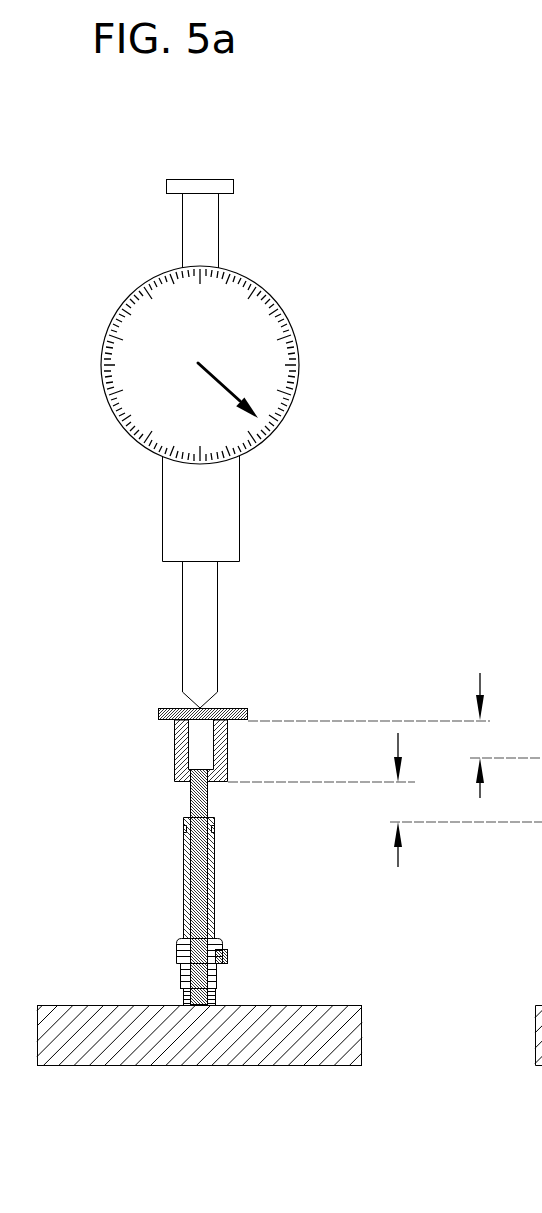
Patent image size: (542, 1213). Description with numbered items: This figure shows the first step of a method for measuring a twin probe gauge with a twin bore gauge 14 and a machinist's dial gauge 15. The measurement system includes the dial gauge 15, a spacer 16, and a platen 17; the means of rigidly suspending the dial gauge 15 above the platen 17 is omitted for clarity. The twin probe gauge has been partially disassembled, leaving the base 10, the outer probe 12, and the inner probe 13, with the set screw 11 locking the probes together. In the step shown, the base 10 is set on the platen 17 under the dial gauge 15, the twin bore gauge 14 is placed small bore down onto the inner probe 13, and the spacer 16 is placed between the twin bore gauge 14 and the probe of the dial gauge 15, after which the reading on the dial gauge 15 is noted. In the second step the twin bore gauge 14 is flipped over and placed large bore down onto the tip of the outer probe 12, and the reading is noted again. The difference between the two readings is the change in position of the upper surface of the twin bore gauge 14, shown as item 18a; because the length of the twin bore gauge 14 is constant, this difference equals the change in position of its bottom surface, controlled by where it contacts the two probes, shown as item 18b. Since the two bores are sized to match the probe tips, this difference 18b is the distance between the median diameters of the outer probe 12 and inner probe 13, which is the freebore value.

The base 10 is at (176, 957).
The set screw 11 is at (541, 956).
The outer probe 12 is at (183, 878).
The inner probe 13 is at (190, 801).
The twin bore gauge 14 is at (167, 753).
The machinist's dial gauge 15 is at (541, 503).
The spacer 16 is at (541, 640).
The platen 17 is at (525, 1030).
The change in position of the upper surface of the twin bore gauge 18a is at (480, 673).
The change in position of the bottom surface of the twin bore gauge 18b is at (398, 867).